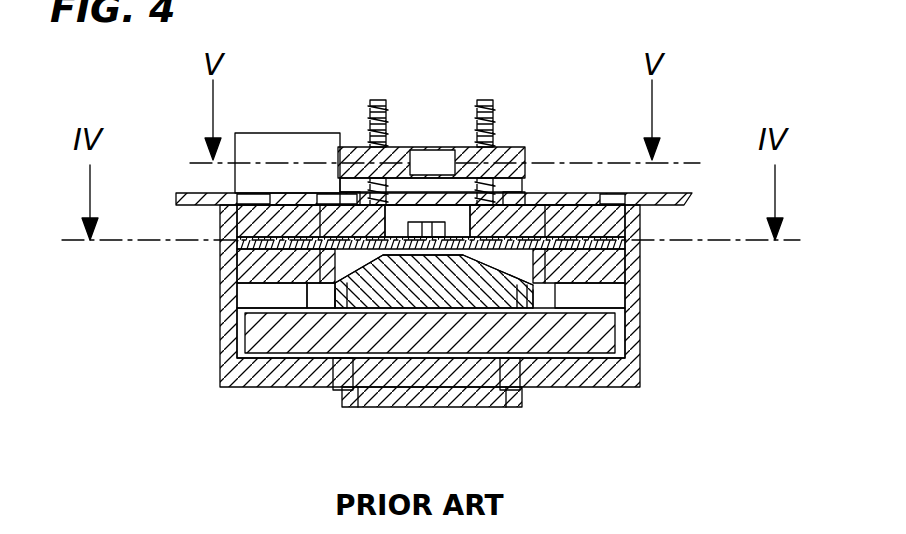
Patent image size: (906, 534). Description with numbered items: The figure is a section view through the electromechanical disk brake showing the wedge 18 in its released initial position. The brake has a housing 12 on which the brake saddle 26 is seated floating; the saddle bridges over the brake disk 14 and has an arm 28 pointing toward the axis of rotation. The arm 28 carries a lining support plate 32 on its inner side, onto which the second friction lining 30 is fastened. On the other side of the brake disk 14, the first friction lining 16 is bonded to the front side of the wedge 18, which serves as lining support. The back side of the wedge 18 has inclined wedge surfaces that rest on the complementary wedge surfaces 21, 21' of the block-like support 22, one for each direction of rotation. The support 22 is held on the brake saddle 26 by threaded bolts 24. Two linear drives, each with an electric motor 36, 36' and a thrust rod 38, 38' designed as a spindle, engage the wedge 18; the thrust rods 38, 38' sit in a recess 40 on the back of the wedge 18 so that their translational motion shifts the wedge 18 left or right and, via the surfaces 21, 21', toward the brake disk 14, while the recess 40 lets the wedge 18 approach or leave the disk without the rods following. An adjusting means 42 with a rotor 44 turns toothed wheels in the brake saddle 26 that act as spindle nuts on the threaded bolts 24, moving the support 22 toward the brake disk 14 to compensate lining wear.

The housing 12 is at (640, 332).
The brake disk 14 is at (232, 360).
The first friction lining 16 is at (373, 390).
The wedge 18 is at (322, 380).
The complementary wedge surface 21 is at (282, 363).
The complementary wedge surface 21' is at (578, 369).
The support 22 is at (520, 207).
The threaded bolt 24 is at (378, 100).
The brake saddle 26 is at (420, 150).
The arm 28 is at (490, 407).
The second friction lining 30 is at (430, 380).
The lining support plate 32 is at (457, 403).
The electric motor 36 is at (250, 280).
The electric motor 36' is at (636, 278).
The thrust rod 38 is at (275, 221).
The thrust rod 38' is at (605, 221).
The recess 40 is at (437, 212).
The adjusting means 42 is at (509, 106).
The rotor 44 is at (250, 146).